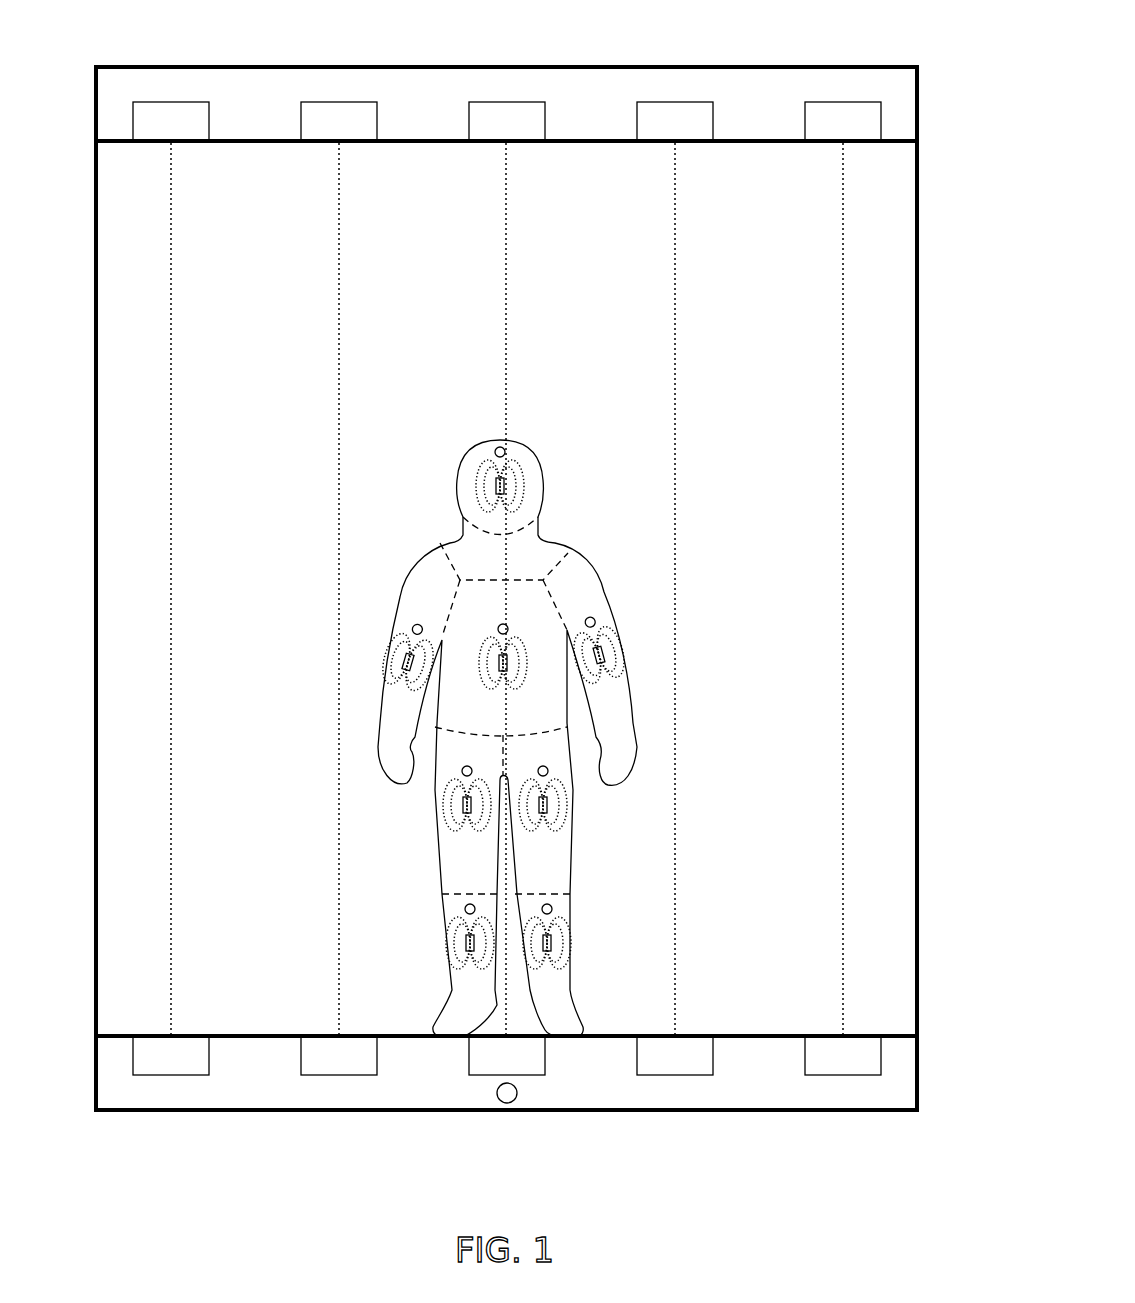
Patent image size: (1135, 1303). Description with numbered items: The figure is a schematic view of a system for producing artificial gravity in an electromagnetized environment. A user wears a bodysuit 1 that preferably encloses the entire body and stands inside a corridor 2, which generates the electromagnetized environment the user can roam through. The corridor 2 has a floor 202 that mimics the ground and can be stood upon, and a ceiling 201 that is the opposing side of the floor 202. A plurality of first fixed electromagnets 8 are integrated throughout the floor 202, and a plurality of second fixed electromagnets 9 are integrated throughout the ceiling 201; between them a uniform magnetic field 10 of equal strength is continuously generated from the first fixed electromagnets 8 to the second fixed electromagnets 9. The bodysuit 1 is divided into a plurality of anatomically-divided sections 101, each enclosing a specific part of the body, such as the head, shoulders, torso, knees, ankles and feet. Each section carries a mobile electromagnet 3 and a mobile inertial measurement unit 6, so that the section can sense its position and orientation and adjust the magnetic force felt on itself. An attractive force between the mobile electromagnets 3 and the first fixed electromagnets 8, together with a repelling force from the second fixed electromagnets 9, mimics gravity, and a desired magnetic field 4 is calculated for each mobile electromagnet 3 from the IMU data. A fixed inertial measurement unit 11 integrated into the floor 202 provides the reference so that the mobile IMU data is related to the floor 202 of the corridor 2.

The bodysuit 1 is at (576, 499).
The corridor 2 is at (84, 215).
The mobile electromagnet 3 is at (499, 665).
The desired magnetic field 4 is at (500, 650).
The mobile inertial measurement unit 6 is at (507, 628).
The first fixed electromagnet 8 is at (161, 1068).
The second fixed electromagnet 9 is at (161, 134).
The uniform magnetic field 10 is at (172, 243).
The fixed inertial measurement unit 11 is at (513, 1101).
The anatomically-divided section 101 is at (522, 726).
The ceiling 201 is at (902, 80).
The floor 202 is at (902, 1101).